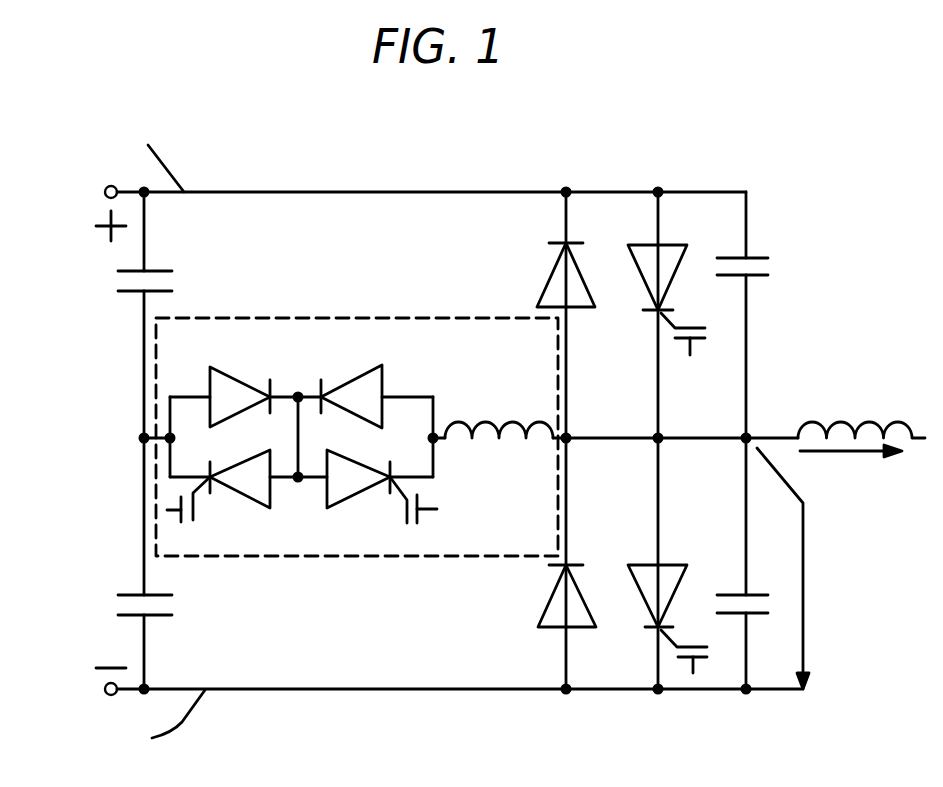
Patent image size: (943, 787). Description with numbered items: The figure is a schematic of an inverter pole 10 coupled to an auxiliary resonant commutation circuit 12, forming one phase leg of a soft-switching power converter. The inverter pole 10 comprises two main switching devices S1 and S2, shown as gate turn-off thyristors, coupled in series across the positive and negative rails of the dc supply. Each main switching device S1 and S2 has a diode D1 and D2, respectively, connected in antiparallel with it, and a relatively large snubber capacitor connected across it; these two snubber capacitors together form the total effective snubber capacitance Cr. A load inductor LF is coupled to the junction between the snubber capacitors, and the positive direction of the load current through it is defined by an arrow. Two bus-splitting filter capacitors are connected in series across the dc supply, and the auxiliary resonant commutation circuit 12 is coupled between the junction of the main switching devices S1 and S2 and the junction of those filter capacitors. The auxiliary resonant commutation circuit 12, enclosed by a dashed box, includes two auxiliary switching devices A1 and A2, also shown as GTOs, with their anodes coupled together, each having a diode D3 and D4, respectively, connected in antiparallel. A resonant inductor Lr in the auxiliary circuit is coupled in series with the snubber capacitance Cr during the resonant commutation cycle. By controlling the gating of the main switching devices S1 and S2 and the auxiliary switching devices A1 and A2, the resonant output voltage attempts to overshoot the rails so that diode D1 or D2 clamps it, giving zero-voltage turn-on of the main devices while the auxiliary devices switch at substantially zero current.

The inverter pole 10 is at (733, 160).
The auxiliary resonant commutation circuit 12 is at (258, 318).
The diode D1 is at (548, 315).
The diode D2 is at (550, 563).
The main switching device S1 is at (670, 315).
The main switching device S2 is at (669, 563).
The total effective snubber capacitance Cr is at (815, 265).
The resonant inductor Lr is at (493, 413).
The load inductor LF is at (861, 413).
The diode D3 is at (240, 384).
The diode D4 is at (351, 384).
The auxiliary switching device A1 is at (218, 498).
The auxiliary switching device A2 is at (382, 498).